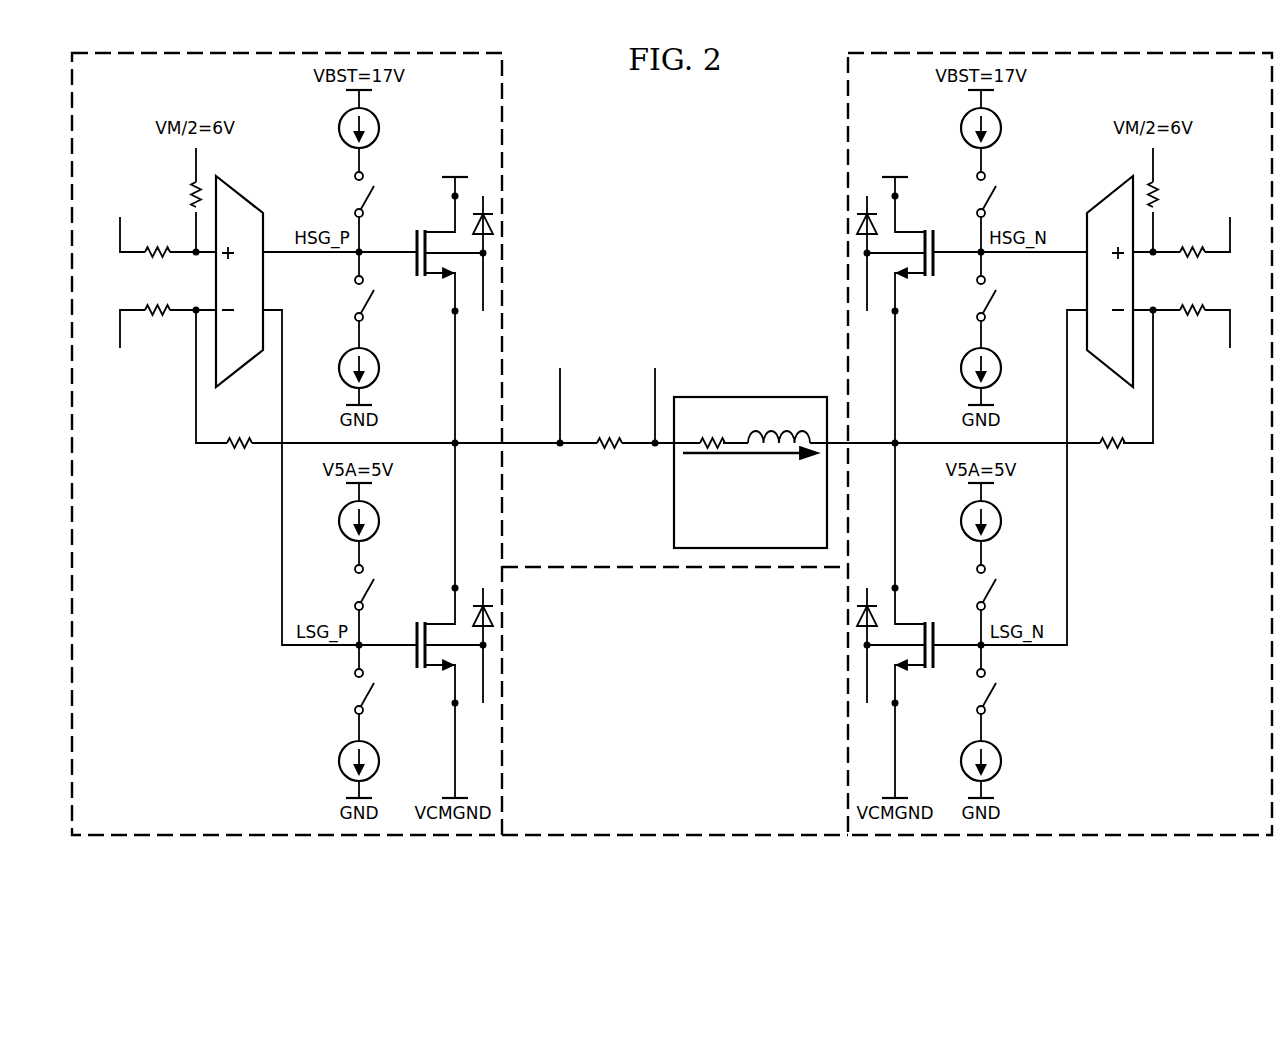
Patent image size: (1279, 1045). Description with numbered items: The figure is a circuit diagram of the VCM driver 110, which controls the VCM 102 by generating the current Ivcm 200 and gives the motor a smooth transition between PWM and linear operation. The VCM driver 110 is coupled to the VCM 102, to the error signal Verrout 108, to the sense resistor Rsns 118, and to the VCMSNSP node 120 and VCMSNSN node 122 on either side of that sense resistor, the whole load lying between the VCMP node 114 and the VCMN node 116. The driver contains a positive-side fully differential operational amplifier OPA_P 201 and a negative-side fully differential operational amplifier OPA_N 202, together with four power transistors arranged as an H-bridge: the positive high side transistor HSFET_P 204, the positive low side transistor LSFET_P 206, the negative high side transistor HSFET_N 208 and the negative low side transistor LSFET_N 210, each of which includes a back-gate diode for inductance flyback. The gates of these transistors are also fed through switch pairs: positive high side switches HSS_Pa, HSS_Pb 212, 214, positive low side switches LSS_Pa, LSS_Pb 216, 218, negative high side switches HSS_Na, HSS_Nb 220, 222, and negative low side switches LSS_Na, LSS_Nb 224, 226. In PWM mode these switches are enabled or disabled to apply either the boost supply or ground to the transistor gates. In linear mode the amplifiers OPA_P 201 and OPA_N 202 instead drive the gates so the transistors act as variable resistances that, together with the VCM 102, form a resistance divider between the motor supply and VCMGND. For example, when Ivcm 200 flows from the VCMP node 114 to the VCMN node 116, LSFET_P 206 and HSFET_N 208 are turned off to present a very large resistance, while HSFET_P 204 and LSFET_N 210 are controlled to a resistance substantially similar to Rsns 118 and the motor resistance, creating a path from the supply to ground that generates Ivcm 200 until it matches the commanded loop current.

The VCM 102 is at (750, 397).
The Verrout 108 is at (132, 308).
The VCM driver 110 is at (843, 126).
The VCMP node 114 is at (450, 449).
The VCMN node 116 is at (899, 449).
The Rsns 118 is at (607, 452).
The VCMSNSP node 120 is at (655, 404).
The VCMSNSN node 122 is at (561, 398).
The Ivcm 200 is at (745, 457).
The positive-side fully differential operational amplifier (OPA_P) 201 is at (242, 196).
The negative-side fully differential operational amplifier (OPA_N) 202 is at (1108, 196).
The positive high side field effect transistor (HSFET_P) 204 is at (476, 331).
The positive low side field effect transistor (LSFET_P) 206 is at (508, 718).
The negative high side field effect transistor (HSFET_N) 208 is at (874, 331).
The negative low side field effect transistor (LSFET_N) 210 is at (842, 718).
The positive high side switch (HSS_Pa) 212 is at (358, 197).
The positive high side switch (HSS_Pb) 214 is at (358, 304).
The positive low side switch (LSS_Pa) 216 is at (358, 592).
The positive low side switch (LSS_Pb) 218 is at (358, 695).
The negative high side switch (HSS_Na) 220 is at (980, 197).
The negative high side switch (HSS_Nb) 222 is at (980, 304).
The negative low side switch (LSS_Na) 224 is at (980, 592).
The negative low side switch (LSS_Nb) 226 is at (980, 695).